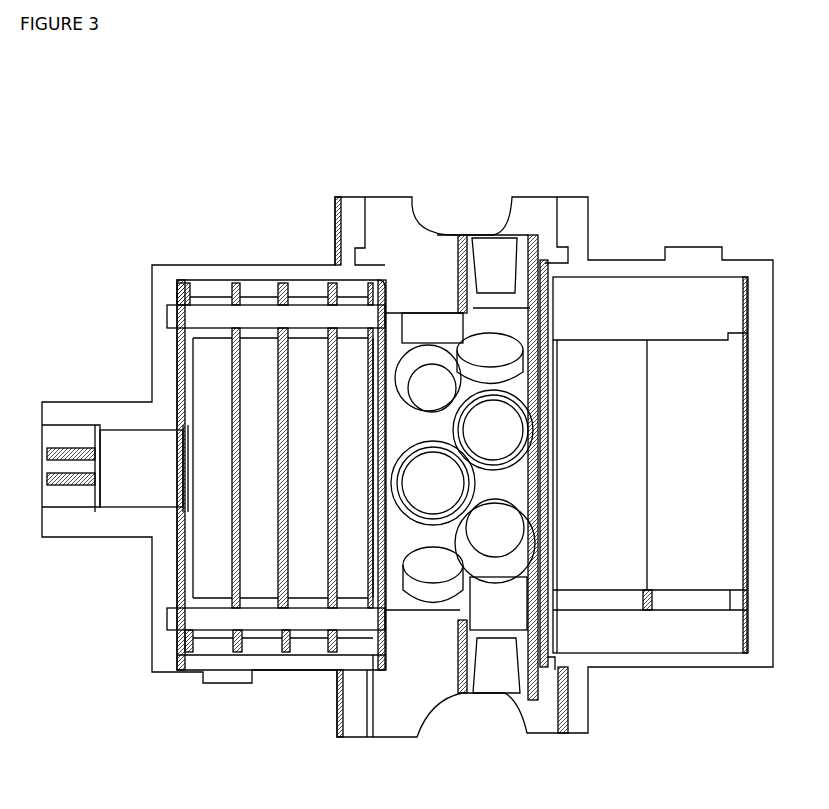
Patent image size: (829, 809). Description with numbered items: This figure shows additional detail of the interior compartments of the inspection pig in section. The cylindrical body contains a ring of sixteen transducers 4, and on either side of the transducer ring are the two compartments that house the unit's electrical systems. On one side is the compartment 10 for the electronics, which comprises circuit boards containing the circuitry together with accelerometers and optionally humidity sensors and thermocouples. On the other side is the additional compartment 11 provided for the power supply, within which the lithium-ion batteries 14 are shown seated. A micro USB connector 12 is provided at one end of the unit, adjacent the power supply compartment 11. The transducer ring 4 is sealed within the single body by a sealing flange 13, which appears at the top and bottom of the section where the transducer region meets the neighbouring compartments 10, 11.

The transducers 4 is at (440, 435).
The compartment 10 is at (698, 435).
The additional compartment 11 is at (255, 403).
The micro USB connector 12 is at (143, 477).
The sealing flange 13 is at (395, 248).
The lithium-ion batteries 14 is at (193, 610).